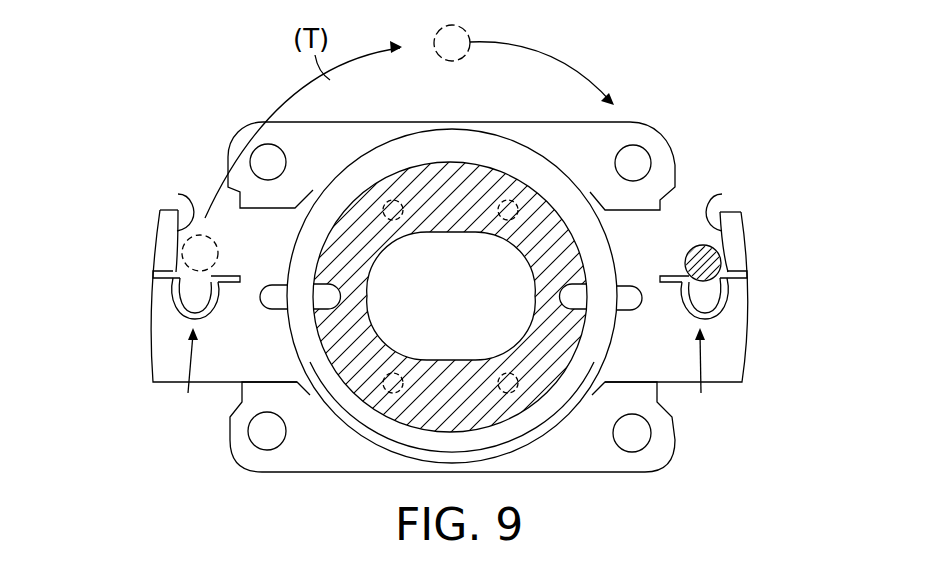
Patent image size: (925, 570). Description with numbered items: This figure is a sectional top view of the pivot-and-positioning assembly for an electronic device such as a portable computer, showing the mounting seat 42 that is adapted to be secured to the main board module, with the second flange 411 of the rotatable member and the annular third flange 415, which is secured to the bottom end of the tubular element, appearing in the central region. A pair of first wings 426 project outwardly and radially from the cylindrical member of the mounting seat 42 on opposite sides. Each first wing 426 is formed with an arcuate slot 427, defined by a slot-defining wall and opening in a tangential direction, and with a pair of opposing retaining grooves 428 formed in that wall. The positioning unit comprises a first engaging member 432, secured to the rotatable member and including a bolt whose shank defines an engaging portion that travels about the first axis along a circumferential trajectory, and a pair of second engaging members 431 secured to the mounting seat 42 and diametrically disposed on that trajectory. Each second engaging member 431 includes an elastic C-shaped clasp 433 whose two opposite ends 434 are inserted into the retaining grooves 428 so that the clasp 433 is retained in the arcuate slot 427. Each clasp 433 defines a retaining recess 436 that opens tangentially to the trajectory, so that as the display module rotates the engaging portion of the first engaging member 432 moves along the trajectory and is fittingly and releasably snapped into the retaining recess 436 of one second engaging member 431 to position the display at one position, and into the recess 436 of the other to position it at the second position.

The mounting seat 42 is at (548, 115).
The second flange 411 is at (487, 138).
The annular third flange 415 is at (440, 178).
The first wings 426 is at (157, 378).
The arcuate slot 427 is at (178, 194).
The retaining grooves 428 is at (153, 277).
The second engaging members 431 is at (449, 376).
The first engaging member 432 is at (201, 234).
The elastic C-shaped clasp 433 is at (177, 305).
The opposite ends of the clasp 434 is at (156, 272).
The retaining recess 436 is at (186, 311).